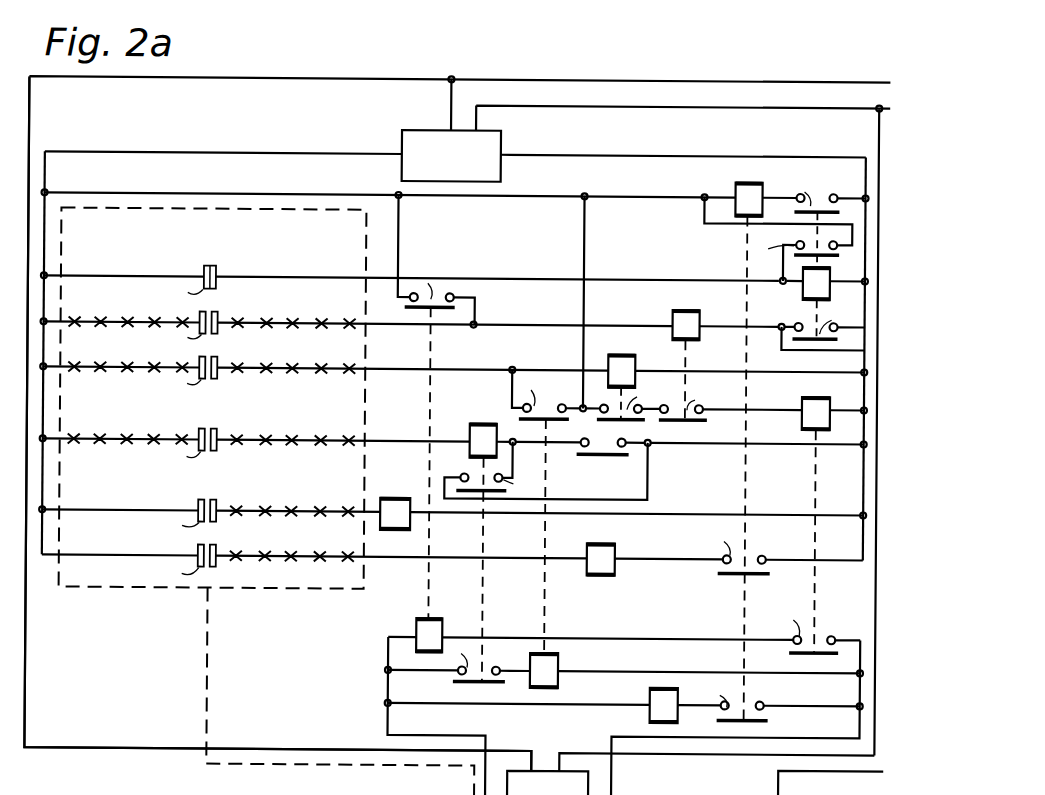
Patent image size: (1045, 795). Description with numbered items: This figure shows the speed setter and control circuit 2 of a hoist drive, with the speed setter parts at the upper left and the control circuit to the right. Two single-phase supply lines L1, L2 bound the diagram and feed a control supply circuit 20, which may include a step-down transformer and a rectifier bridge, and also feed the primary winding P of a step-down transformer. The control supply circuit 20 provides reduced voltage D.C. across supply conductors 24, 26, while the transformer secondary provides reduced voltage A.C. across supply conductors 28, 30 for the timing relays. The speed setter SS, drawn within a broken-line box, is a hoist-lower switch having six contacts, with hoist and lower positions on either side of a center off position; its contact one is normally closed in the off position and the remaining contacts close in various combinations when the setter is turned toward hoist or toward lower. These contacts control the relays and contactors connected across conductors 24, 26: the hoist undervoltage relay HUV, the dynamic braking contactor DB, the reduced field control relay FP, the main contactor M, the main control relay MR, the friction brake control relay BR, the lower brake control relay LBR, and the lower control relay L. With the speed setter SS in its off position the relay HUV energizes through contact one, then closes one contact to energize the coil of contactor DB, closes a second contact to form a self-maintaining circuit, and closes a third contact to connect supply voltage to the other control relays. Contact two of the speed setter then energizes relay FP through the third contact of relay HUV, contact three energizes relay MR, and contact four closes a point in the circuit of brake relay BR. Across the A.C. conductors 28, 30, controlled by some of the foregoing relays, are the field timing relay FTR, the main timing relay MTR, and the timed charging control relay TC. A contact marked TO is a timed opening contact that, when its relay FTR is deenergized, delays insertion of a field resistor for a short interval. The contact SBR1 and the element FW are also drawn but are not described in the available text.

The speed setter and control circuit 2 is at (596, 66).
The control supply circuit 20 is at (404, 127).
The supply conductor 24 is at (90, 151).
The supply conductor 26 is at (848, 157).
The supply conductor 28 is at (392, 683).
The supply conductor 30 is at (864, 686).
The speed setter SS is at (233, 207).
The dynamic braking contactor DB is at (736, 190).
The hoist undervoltage relay HUV is at (805, 290).
The reduced field control relay FP is at (674, 315).
The main control relay MR is at (618, 358).
The main timing relay MTR is at (553, 666).
The friction brake control relay BR is at (476, 436).
The contact SBR1 is at (630, 454).
The lower brake control relay LBR is at (408, 498).
The lower control relay L is at (612, 554).
The main contactor M is at (804, 408).
The field timing relay FTR is at (424, 630).
The timed charging control relay TC is at (652, 702).
The supply line L1 is at (285, 76).
The supply line L2 is at (712, 756).
The primary winding P is at (547, 773).
The element FW is at (830, 783).
The timed opening contact TO is at (410, 449).